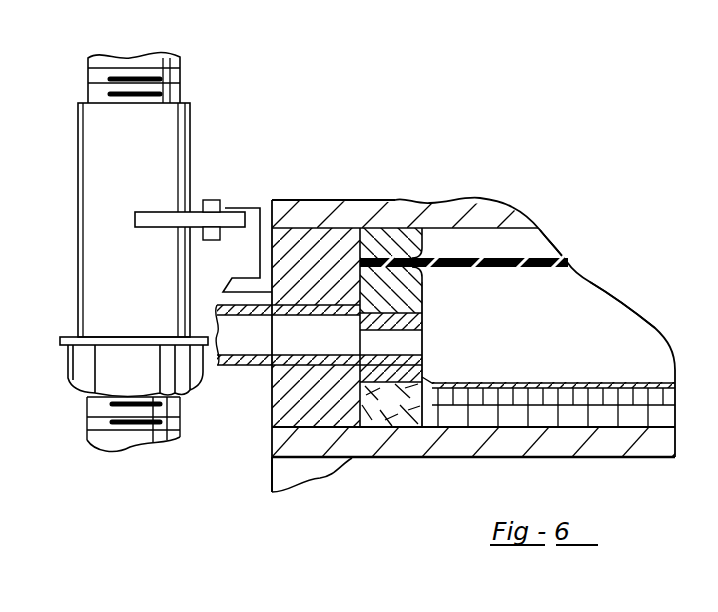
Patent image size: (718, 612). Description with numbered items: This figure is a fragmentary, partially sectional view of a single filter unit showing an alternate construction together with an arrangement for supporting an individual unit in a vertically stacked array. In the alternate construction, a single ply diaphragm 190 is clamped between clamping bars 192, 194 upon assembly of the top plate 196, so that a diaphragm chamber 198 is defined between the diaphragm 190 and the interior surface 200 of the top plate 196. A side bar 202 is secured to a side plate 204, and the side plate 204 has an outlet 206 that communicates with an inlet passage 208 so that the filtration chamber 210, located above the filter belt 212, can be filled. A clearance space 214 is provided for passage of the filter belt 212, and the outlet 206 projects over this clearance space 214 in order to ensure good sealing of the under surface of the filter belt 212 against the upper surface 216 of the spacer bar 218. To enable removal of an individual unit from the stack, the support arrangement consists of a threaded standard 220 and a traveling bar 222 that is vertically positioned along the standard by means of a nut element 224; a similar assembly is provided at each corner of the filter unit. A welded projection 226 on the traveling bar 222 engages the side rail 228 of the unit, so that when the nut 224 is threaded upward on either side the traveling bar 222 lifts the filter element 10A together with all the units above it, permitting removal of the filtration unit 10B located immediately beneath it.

The filter element 10A is at (685, 268).
The filtration unit 10B is at (262, 475).
The single ply diaphragm 190 is at (507, 268).
The clamping bar 192 is at (408, 247).
The clamping bar 194 is at (423, 297).
The top plate 196 is at (360, 209).
The diaphragm chamber 198 is at (550, 242).
The interior surface 200 is at (453, 240).
The side bar 202 is at (422, 323).
The side plate 204 is at (303, 240).
The outlet 206 is at (398, 352).
The inlet passage 208 is at (237, 365).
The filtration chamber 210 is at (595, 347).
The filter belt 212 is at (594, 378).
The clearance space 214 is at (357, 380).
The upper surface 216 is at (402, 374).
The spacer bar 218 is at (390, 430).
The threaded standard 220 is at (185, 80).
The traveling bar 222 is at (190, 147).
The nut element 224 is at (80, 382).
The welded projection 226 is at (198, 208).
The side rail 228 is at (262, 277).